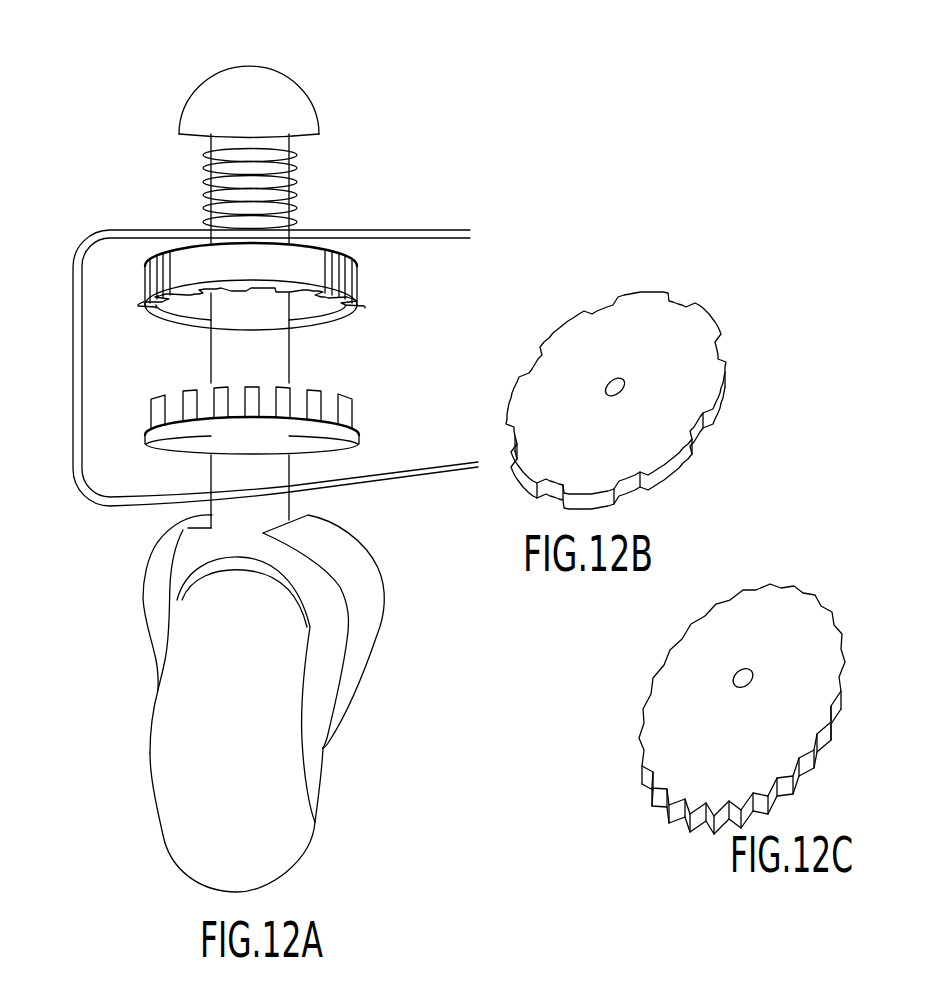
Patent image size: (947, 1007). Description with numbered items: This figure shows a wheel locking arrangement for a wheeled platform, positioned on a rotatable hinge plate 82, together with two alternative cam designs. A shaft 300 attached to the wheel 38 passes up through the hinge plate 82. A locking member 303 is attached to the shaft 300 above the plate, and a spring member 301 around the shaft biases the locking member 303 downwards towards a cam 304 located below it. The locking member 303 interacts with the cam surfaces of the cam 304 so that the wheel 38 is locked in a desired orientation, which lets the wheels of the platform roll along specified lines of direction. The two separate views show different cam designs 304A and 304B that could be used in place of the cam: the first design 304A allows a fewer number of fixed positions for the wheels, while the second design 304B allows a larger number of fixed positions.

In FIG. 12A, the shaft 300 is at (318, 107).
In FIG. 12A, the spring member 301 is at (293, 203).
In FIG. 12A, the hinge plate 82 is at (470, 232).
In FIG. 12A, the locking member 303 is at (353, 290).
In FIG. 12A, the cam 304 is at (145, 412).
In FIG. 12A, the wheel 38 is at (188, 642).
In FIG. 12B, the cam design 304A is at (673, 411).
In FIG. 12C, the cam design 304B is at (802, 608).